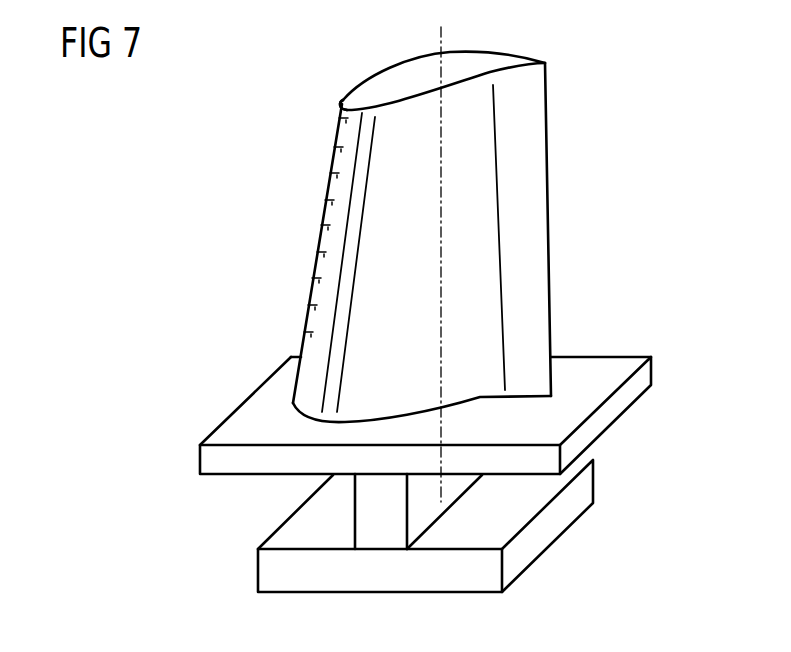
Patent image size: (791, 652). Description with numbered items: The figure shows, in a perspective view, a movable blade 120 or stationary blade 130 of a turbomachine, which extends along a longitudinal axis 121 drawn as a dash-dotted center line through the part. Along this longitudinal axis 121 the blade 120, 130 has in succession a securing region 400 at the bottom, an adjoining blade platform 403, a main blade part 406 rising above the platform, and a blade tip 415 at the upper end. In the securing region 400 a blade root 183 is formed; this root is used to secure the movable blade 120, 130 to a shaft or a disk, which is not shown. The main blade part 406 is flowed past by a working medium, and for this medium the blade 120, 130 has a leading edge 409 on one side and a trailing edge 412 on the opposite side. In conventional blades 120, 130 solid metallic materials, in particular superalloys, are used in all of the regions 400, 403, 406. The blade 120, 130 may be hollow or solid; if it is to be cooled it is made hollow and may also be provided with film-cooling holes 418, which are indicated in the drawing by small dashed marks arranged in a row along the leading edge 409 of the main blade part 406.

The longitudinal axis 121 is at (438, 47).
The movable blade 120 is at (441, 228).
The stationary blade 130 is at (366, 228).
The leading edge 409 is at (318, 175).
The blade tip 415 is at (357, 95).
The trailing edge 412 is at (570, 193).
The main blade part 406 is at (373, 272).
The film-cooling holes 418 is at (344, 118).
The blade platform 403 is at (613, 407).
The blade root 183 is at (308, 528).
The securing region 400 is at (547, 530).